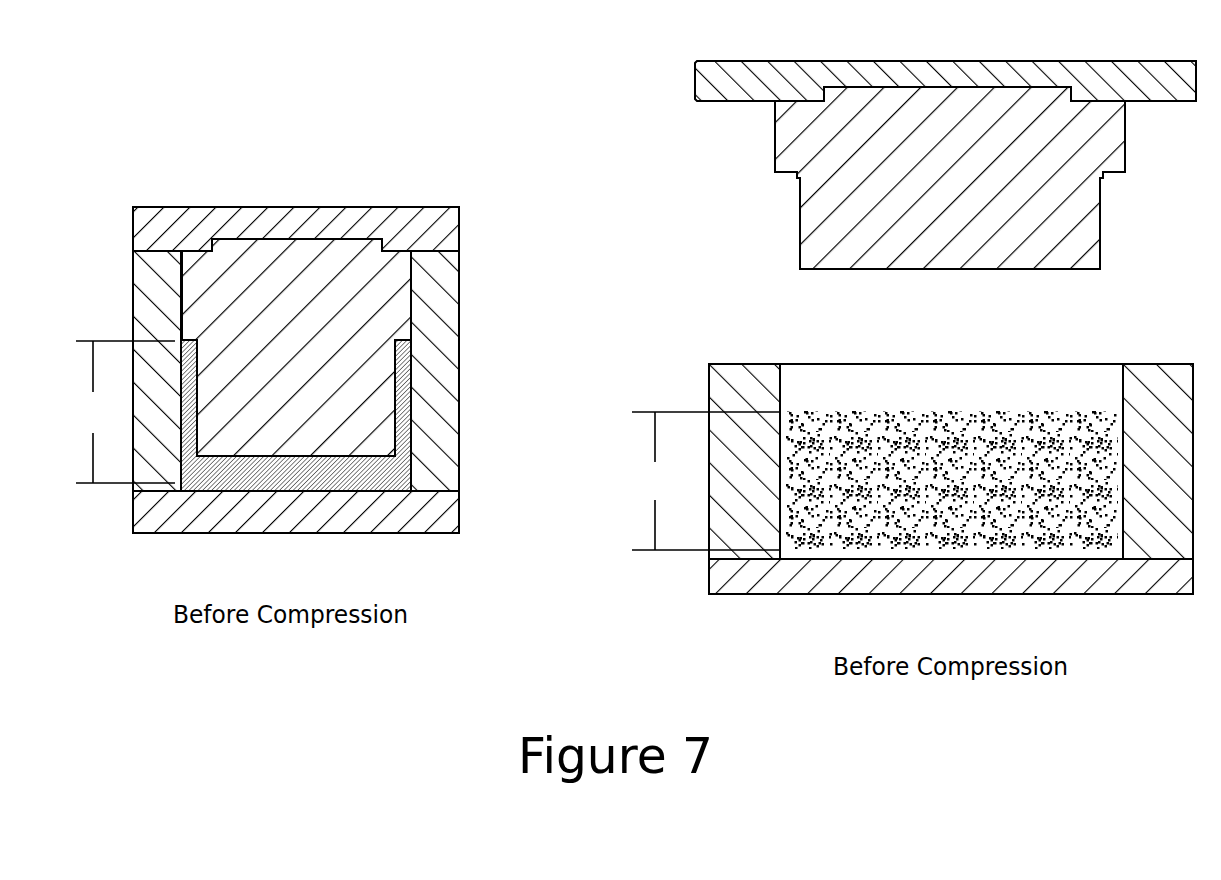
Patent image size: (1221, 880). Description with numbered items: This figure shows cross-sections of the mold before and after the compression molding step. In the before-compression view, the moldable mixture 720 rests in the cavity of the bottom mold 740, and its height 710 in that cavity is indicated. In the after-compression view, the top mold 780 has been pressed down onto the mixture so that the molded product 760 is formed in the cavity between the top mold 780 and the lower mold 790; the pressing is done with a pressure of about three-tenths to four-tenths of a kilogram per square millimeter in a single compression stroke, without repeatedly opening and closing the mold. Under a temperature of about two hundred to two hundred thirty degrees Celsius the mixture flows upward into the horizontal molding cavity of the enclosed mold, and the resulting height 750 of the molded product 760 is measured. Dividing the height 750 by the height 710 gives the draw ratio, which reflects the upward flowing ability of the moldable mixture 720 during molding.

The top mold 780 is at (273, 283).
The molded product 760 is at (203, 493).
The lower mold 790 is at (368, 518).
The height 750 is at (124, 412).
The moldable mixture 720 is at (860, 410).
The height 710 is at (706, 481).
The bottom mold 740 is at (803, 577).